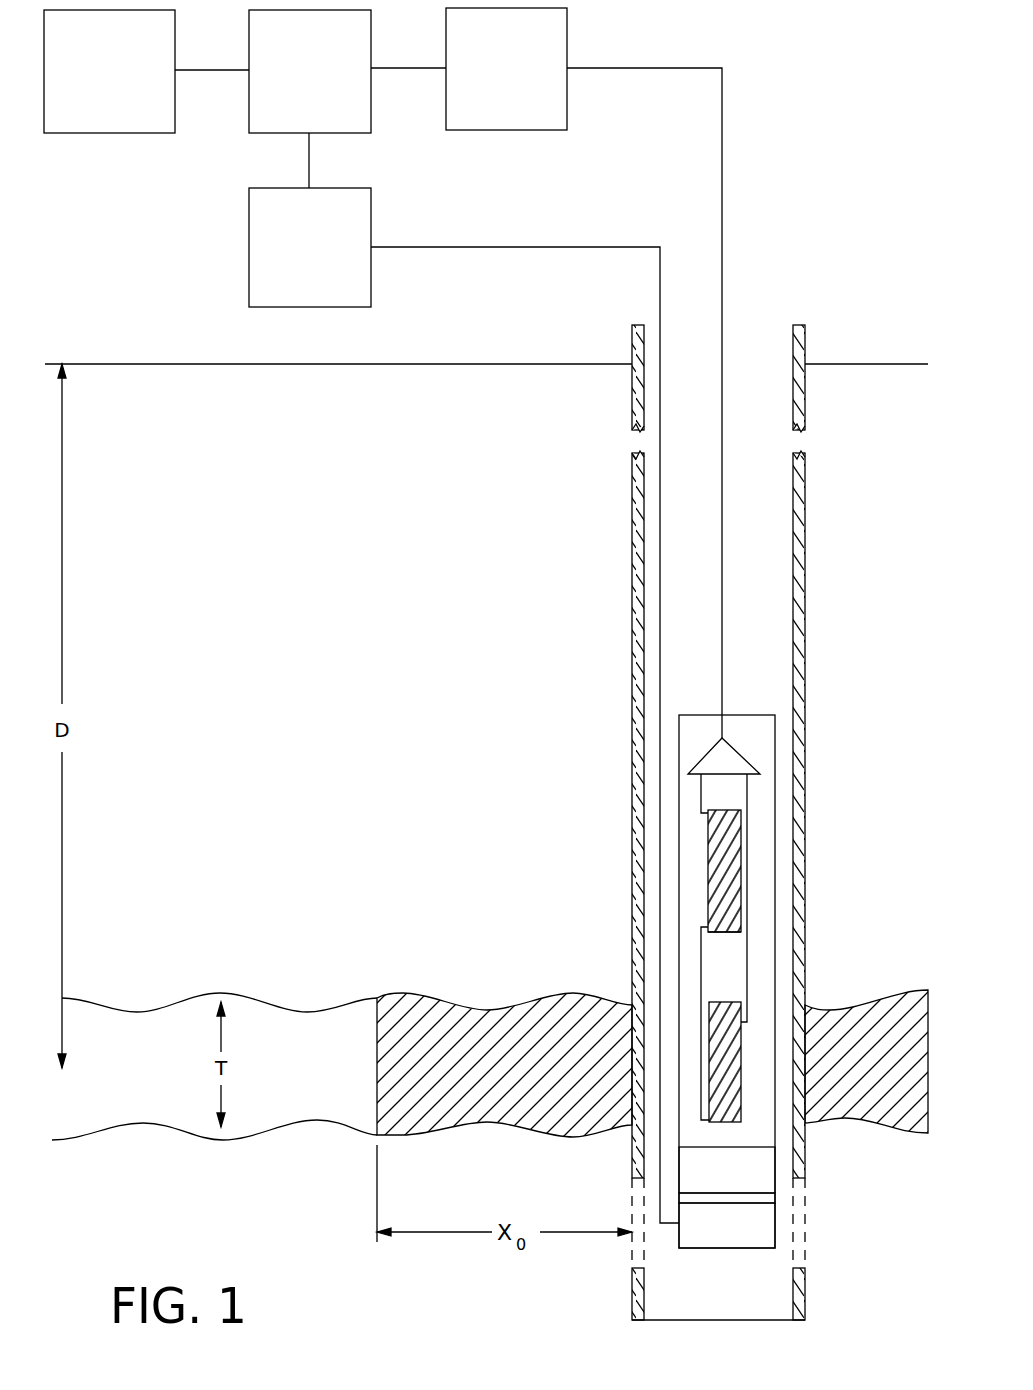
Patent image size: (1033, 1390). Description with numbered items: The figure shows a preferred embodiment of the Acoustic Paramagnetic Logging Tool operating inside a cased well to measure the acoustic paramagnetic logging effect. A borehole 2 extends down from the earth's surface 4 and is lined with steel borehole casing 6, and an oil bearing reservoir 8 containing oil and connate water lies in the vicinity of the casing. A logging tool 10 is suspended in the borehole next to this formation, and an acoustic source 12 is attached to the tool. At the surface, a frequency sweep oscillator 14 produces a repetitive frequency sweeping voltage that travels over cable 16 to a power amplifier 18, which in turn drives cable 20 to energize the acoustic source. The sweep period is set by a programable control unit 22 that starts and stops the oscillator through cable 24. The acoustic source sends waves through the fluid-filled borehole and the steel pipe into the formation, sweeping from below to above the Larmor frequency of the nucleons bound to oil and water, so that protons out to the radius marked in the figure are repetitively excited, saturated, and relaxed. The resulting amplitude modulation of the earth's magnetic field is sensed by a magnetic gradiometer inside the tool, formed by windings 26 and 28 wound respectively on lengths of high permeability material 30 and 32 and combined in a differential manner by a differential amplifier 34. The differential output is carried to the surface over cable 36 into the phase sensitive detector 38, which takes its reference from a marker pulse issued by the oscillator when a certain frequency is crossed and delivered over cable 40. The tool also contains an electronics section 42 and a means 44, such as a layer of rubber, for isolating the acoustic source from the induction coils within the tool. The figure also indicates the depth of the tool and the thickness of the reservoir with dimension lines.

The borehole 2 is at (716, 1319).
The earth's surface 4 is at (597, 363).
The steel borehole casing 6 is at (805, 325).
The oil bearing reservoir 8 is at (277, 1125).
The logging tool 10 is at (755, 715).
The acoustic source 12 is at (775, 1225).
The frequency sweep oscillator 14 is at (371, 118).
The cable 16 is at (307, 173).
The power amplifier 18 is at (371, 292).
The cable 20 is at (610, 246).
The programable control unit 22 is at (175, 118).
The cable 24 is at (238, 68).
The winding 26 is at (701, 813).
The winding 28 is at (747, 1005).
The length of high permeability material 30 is at (730, 932).
The length of high permeability material 32 is at (722, 1122).
The differential amplifier 34 is at (710, 750).
The cable 36 is at (723, 255).
The phase sensitive detector 38 is at (567, 42).
The cable 40 is at (431, 66).
The electronics section 42 is at (775, 1162).
The means of isolating the acoustic source 44 is at (775, 1200).